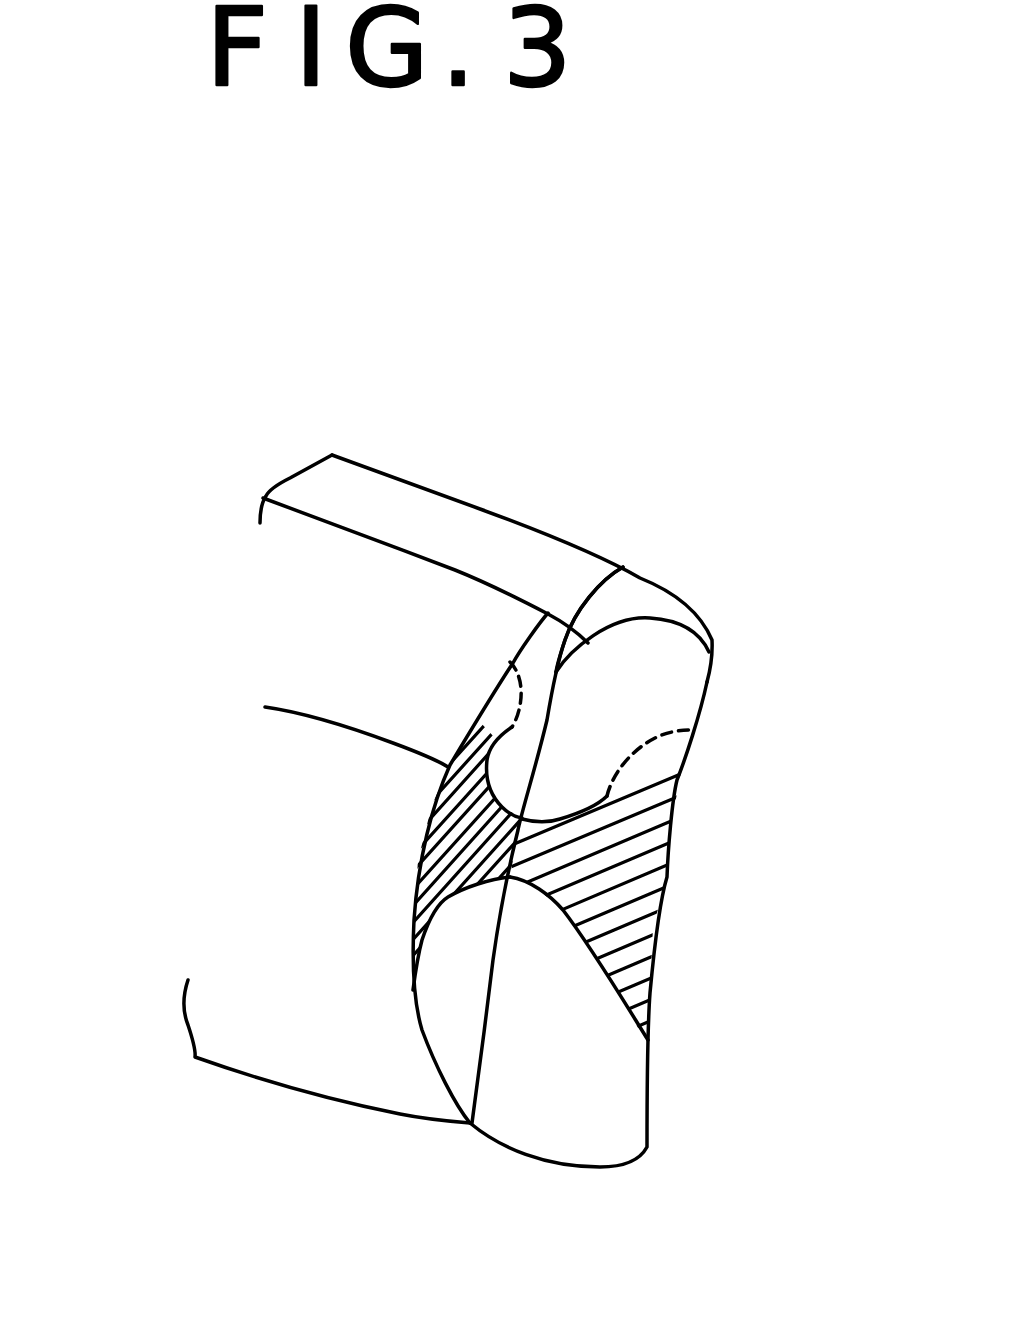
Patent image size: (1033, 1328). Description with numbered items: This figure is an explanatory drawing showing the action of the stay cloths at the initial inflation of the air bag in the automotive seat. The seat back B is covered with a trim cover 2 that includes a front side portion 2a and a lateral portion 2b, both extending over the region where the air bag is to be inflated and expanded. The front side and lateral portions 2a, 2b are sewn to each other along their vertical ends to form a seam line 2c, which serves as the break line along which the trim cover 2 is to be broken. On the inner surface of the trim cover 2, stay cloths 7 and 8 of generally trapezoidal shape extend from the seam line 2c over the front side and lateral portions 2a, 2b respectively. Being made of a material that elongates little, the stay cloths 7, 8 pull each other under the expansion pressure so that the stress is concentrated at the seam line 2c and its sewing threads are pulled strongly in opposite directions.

The trim cover 2 is at (307, 823).
The front side portion 2a is at (453, 1015).
The lateral portion 2b is at (588, 1080).
The seam line 2c is at (623, 567).
The stay cloth 7 is at (507, 660).
The stay cloth 8 is at (690, 730).
The seat back B is at (540, 530).